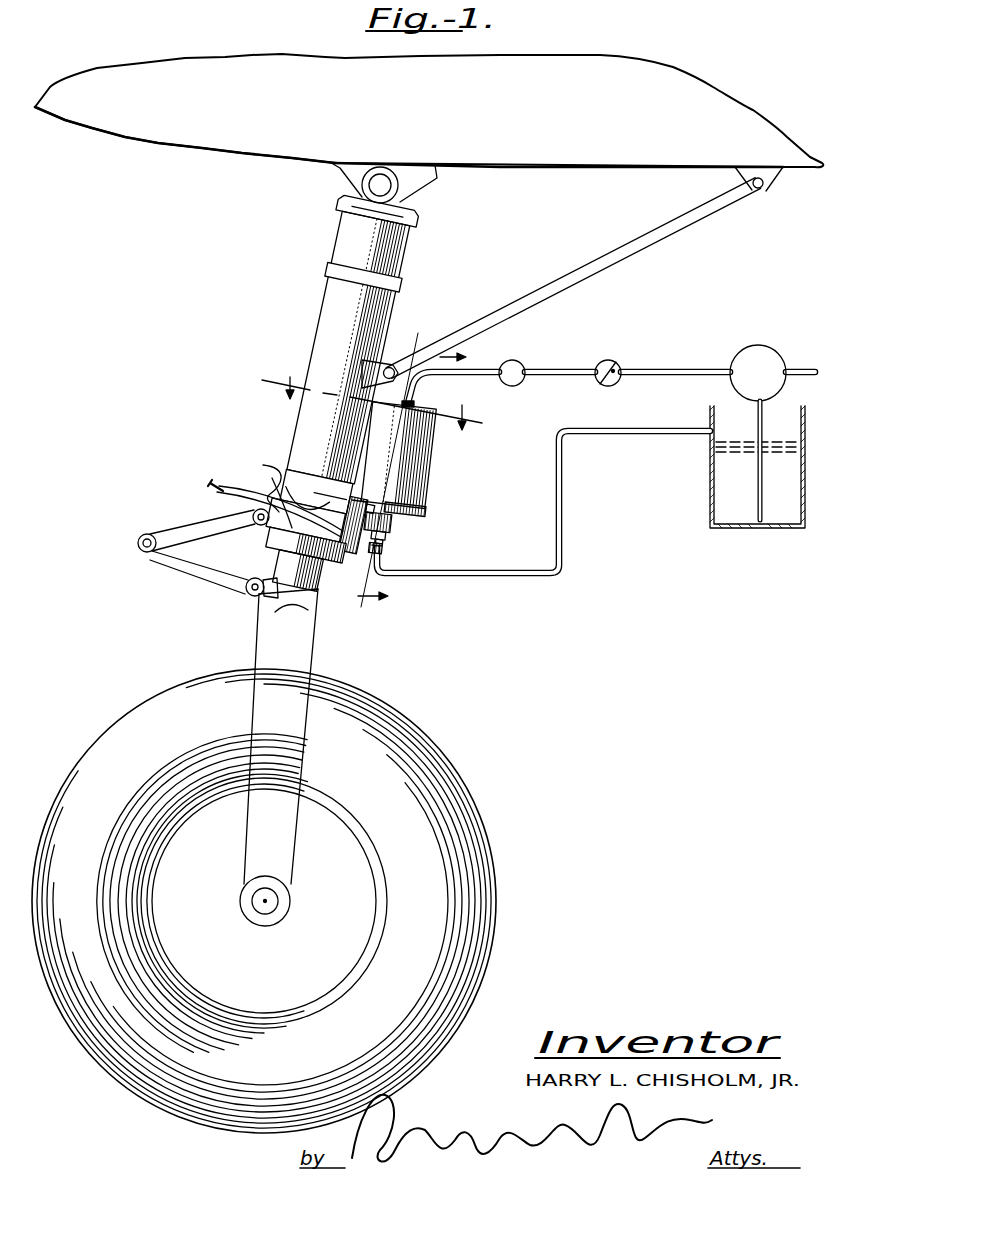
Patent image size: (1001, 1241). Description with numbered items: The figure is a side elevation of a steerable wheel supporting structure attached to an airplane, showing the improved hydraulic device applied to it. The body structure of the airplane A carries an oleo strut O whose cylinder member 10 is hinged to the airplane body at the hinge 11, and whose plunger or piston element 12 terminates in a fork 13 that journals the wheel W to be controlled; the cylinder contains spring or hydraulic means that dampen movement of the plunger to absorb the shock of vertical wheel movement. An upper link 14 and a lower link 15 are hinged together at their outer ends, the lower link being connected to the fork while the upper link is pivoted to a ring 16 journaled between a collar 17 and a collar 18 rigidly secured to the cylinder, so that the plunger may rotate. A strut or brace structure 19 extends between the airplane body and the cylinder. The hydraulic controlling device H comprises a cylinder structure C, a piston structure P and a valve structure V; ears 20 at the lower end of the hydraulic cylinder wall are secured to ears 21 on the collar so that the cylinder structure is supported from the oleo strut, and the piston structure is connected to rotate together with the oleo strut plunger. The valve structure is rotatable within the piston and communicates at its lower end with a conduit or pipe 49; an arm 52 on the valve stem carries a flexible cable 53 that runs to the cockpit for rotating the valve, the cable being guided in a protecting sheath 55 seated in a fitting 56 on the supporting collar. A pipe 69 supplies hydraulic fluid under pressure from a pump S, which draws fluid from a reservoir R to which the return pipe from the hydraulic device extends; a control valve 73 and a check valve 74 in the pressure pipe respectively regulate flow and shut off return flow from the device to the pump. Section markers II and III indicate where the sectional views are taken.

The cylinder member 10 is at (340, 291).
The hinge 11 is at (382, 185).
The plunger or piston element 12 is at (310, 568).
The fork 13 is at (274, 655).
The upper link 14 is at (214, 527).
The lower link 15 is at (225, 570).
The ring 16 is at (272, 478).
The collar 17 is at (303, 490).
The collar 18 is at (269, 542).
The strut or brace structure 19 is at (617, 255).
The ears 20 is at (360, 487).
The ears 21 is at (363, 503).
The conduit or pipe 49 is at (480, 577).
The arm 52 is at (373, 548).
The flexible cable 53 is at (211, 487).
The guide and protecting sheath 55 is at (213, 493).
The fitting 56 is at (275, 473).
The pipe 69 is at (432, 378).
The control valve 73 is at (510, 360).
The check valve 74 is at (610, 360).
The body structure of an airplane A is at (560, 147).
The cylinder structure C is at (420, 460).
The hydraulic controlling device H is at (418, 459).
The oleo strut O is at (350, 339).
The piston structure P is at (396, 537).
The reservoir R is at (737, 420).
The pump S is at (760, 346).
The valve structure V is at (396, 552).
The wheel W is at (446, 850).
The section line II is at (372, 414).
The section line III is at (420, 472).